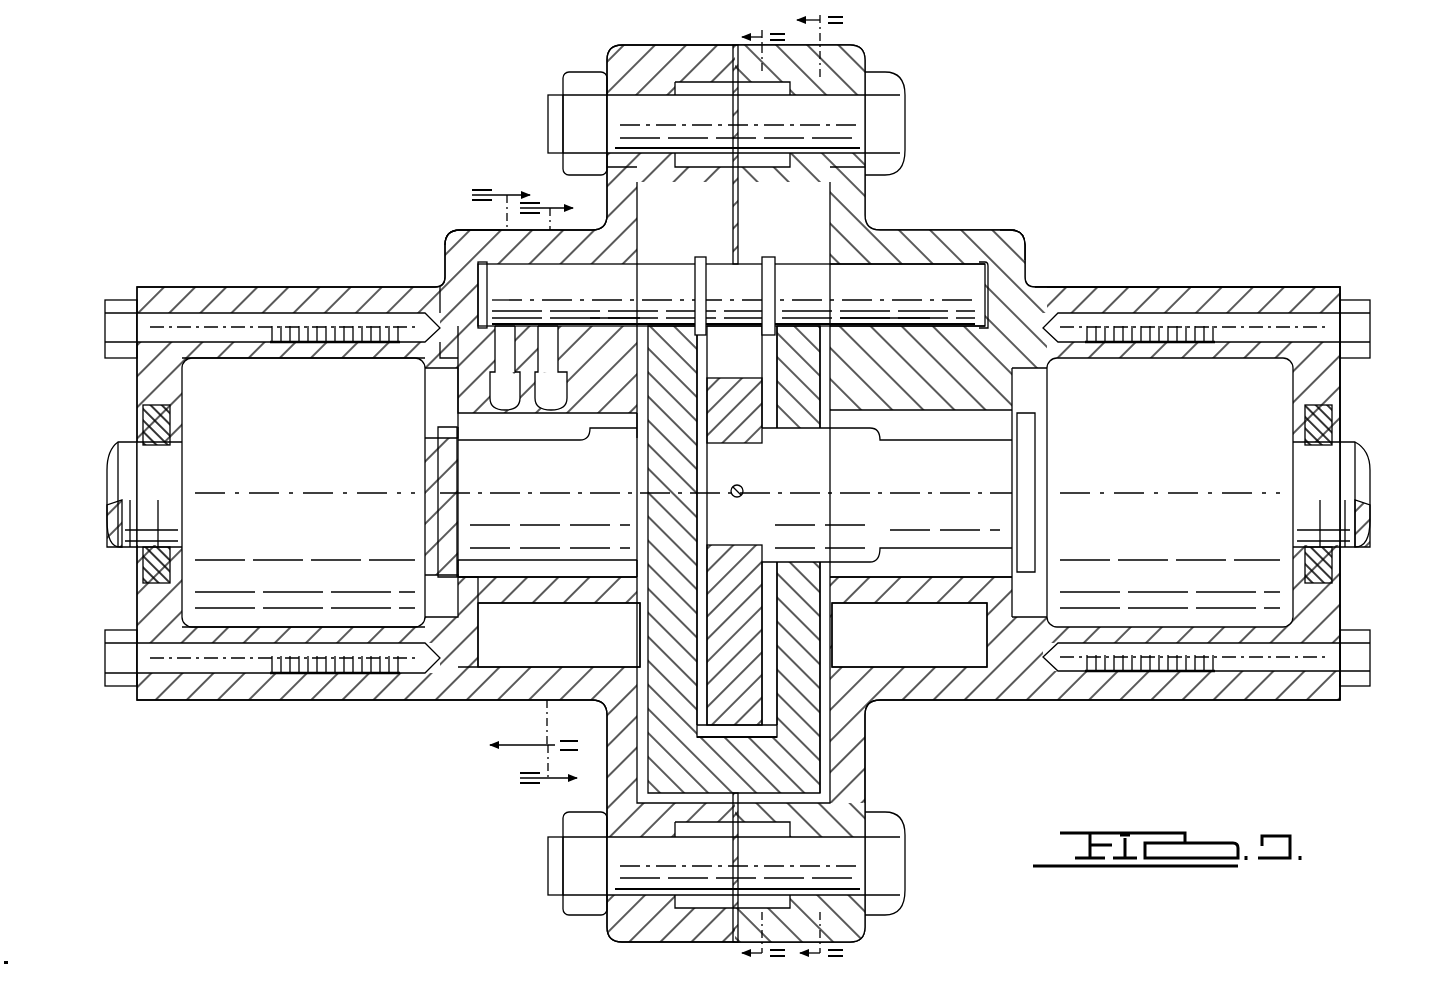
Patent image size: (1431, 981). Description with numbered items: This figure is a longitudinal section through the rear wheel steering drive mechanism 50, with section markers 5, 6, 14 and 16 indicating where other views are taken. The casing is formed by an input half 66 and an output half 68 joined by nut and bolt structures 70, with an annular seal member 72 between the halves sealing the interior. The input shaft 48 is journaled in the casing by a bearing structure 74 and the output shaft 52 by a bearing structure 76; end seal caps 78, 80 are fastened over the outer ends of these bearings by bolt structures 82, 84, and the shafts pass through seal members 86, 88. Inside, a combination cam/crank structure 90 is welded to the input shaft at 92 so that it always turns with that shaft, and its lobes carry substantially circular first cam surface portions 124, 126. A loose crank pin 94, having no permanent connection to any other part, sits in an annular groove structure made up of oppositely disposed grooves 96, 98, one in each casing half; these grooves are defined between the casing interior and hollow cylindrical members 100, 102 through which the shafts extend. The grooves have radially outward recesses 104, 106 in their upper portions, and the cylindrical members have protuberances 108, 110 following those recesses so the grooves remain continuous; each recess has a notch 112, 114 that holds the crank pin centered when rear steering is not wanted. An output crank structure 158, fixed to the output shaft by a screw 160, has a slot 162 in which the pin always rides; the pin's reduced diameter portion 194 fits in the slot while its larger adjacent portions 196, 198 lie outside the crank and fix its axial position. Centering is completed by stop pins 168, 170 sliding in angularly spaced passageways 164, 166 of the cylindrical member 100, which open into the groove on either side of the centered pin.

The rear wheel steering drive mechanism 50 is at (283, 196).
The nut and bolt structures 70 is at (898, 120).
The annular seal member 72 is at (730, 920).
The input half 66 is at (333, 704).
The output half 68 is at (1135, 284).
The bearing structure 74 is at (235, 620).
The bearing structure 76 is at (1253, 618).
The end seal cap 78 is at (152, 702).
The end seal cap 80 is at (1313, 702).
The bolt structures 82 is at (122, 304).
The bolt structures 84 is at (1366, 304).
The seal member 86 is at (140, 425).
The seal member 88 is at (1335, 422).
The input shaft 48 is at (118, 485).
The output shaft 52 is at (1352, 475).
The combination cam/crank structure 90 is at (645, 512).
The weld 92 is at (648, 426).
The loose crank pin 94 is at (800, 264).
The groove 96 is at (486, 641).
The groove 98 is at (982, 641).
The hollow cylindrical member 100 is at (586, 594).
The hollow cylindrical member 102 is at (893, 596).
The recess 104 is at (456, 284).
The recess 106 is at (975, 292).
The protuberance 108 is at (612, 328).
The protuberance 110 is at (878, 328).
The notch 112 is at (485, 292).
The notch 114 is at (1020, 246).
The first cam surface portion 124 is at (666, 328).
The first cam surface portion 126 is at (806, 328).
The output crank structure 158 is at (735, 730).
The screw 160 is at (745, 493).
The slot 162 is at (748, 378).
The passageway 164 is at (512, 418).
The passageway 166 is at (557, 418).
The stop pin 168 is at (506, 326).
The stop pin 170 is at (564, 327).
The reduced diameter portion 194 is at (730, 322).
The adjacent portion 196 is at (701, 260).
The adjacent portion 198 is at (768, 258).
The section line 5 is at (747, 494).
The section line 6 is at (848, 23).
The section line 14 is at (525, 455).
The section line 16 is at (551, 493).